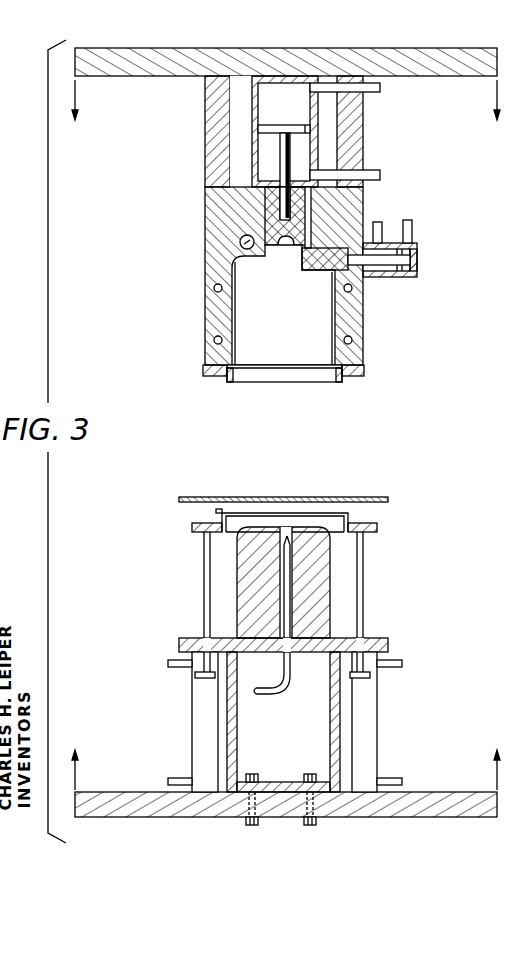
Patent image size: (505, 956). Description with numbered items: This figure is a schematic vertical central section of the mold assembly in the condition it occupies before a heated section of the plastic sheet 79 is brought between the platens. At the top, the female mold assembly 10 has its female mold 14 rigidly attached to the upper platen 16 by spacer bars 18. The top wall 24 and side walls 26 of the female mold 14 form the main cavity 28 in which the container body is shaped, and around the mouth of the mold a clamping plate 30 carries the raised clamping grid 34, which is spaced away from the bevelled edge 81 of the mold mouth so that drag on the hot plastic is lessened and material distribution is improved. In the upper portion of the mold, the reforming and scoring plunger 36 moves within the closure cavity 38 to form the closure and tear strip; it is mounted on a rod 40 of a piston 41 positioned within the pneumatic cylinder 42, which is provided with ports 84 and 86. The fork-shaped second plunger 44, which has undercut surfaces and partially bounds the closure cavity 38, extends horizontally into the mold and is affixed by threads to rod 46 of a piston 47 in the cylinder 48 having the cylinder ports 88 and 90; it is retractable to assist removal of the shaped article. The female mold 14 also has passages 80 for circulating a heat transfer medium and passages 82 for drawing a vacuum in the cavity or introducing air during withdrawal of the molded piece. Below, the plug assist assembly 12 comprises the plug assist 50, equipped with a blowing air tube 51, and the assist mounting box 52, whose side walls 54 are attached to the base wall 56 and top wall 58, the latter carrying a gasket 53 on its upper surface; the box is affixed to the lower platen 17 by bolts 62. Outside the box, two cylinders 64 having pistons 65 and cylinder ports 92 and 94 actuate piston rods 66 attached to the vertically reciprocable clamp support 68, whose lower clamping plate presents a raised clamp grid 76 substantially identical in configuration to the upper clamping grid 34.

The female mold assembly 10 is at (300, 245).
The plug assist assembly 12 is at (280, 644).
The female mold 14 is at (205, 213).
The upper platen 16 is at (495, 47).
The lower platen 17 is at (480, 792).
The spacer bars 18 is at (207, 155).
The top wall 24 is at (263, 260).
The side walls 26 is at (334, 322).
The main cavity 28 is at (280, 345).
The clamping plate 30 is at (229, 377).
The clamping grid 34 is at (330, 383).
The reforming and scoring plunger 36 is at (303, 212).
The closure cavity 38 is at (272, 250).
The rod 40 is at (283, 160).
The piston 41 is at (285, 124).
The pneumatic cylinder 42 is at (319, 113).
The second plunger 44 is at (322, 262).
The rod 46 is at (380, 278).
The piston 47 is at (418, 258).
The cylinder 48 is at (411, 275).
The plug assist 50 is at (331, 546).
The blowing air tube 51 is at (292, 600).
The assist mounting box 52 is at (330, 678).
The gasket 53 is at (216, 640).
The side walls 54 is at (237, 732).
The base wall 56 is at (288, 782).
The top wall 58 is at (389, 646).
The bolts 62 is at (313, 782).
The cylinders 64 is at (191, 720).
The pistons 65 is at (197, 680).
The piston rods 66 is at (203, 576).
The clamp support 68 is at (378, 527).
The clamp grid 76 is at (220, 512).
The plastic sheet 79 is at (360, 496).
The passages 80 is at (214, 288).
The bevelled edge 81 is at (234, 371).
The passages 82 is at (240, 242).
The port 84 is at (382, 176).
The port 86 is at (383, 87).
The cylinder port 88 is at (412, 220).
The cylinder port 90 is at (378, 222).
The cylinder port 92 is at (168, 781).
The cylinder port 94 is at (167, 663).